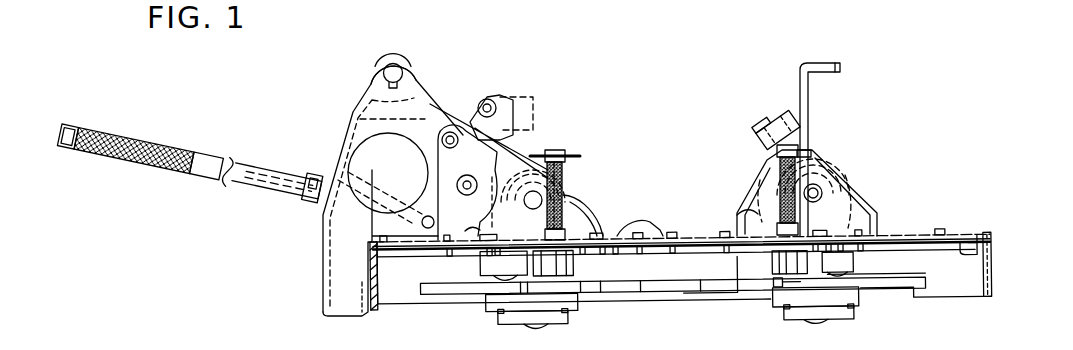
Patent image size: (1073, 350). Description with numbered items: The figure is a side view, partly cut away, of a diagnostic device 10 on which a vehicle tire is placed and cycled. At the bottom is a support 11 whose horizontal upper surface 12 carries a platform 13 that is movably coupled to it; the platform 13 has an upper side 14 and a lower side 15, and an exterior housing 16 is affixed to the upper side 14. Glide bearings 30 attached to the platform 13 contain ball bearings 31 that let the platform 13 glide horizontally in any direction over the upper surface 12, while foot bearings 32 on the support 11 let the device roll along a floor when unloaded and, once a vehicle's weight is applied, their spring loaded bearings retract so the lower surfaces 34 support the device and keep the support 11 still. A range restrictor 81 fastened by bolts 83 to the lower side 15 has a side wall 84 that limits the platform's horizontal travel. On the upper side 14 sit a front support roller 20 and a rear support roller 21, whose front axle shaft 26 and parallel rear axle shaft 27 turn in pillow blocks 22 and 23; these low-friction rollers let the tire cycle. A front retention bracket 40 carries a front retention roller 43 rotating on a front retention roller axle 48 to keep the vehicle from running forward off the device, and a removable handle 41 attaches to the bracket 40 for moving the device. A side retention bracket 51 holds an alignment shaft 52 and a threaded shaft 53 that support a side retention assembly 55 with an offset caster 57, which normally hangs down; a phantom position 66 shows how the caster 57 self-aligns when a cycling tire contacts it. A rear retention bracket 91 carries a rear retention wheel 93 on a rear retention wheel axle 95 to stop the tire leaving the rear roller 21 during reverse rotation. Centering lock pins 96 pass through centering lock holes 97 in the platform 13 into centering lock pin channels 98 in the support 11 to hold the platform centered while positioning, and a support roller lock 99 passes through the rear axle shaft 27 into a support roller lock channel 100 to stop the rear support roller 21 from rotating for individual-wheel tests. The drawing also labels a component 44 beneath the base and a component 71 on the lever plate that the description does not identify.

The diagnostic device 10 is at (156, 231).
The support 11 is at (912, 299).
The horizontal upper surface 12 is at (928, 287).
The platform 13 is at (992, 246).
The upper side 14 is at (970, 246).
The lower side 15 is at (992, 266).
The exterior housing 16 is at (992, 290).
The front support roller 20 is at (567, 176).
The rear support roller 21 is at (830, 145).
The pillow block 22 is at (600, 205).
The pillow block 23 is at (740, 217).
The front axle shaft 26 is at (582, 183).
The rear axle shaft 27 is at (837, 155).
The glide bearings 30 is at (493, 269).
The ball bearings 31 is at (485, 270).
The foot bearings 32 is at (500, 306).
The lower surfaces 34 is at (555, 330).
The front retention bracket 40 is at (358, 108).
The handle 41 is at (235, 150).
The front retention roller 43 is at (368, 62).
The bearing block 44 is at (598, 333).
The front retention roller axle 48 is at (382, 78).
The side retention bracket 51 is at (515, 140).
The alignment shaft 52 is at (487, 95).
The threaded shaft 53 is at (412, 155).
The side retention assembly 55 is at (453, 113).
The offset caster 57 is at (513, 128).
The phantom position 66 is at (517, 95).
The roller pin 71 is at (456, 185).
The range restrictor 81 is at (686, 269).
The bolts 83 is at (662, 235).
The side wall 84 is at (710, 272).
The rear retention bracket 91 is at (768, 165).
The rear retention wheel 93 is at (768, 132).
The rear retention wheel axle 95 is at (768, 120).
The centering lock pins 96 is at (563, 160).
The centering lock holes 97 is at (585, 271).
The centering lock pin channels 98 is at (775, 300).
The support roller lock 99 is at (823, 72).
The support roller lock channel 100 is at (817, 189).